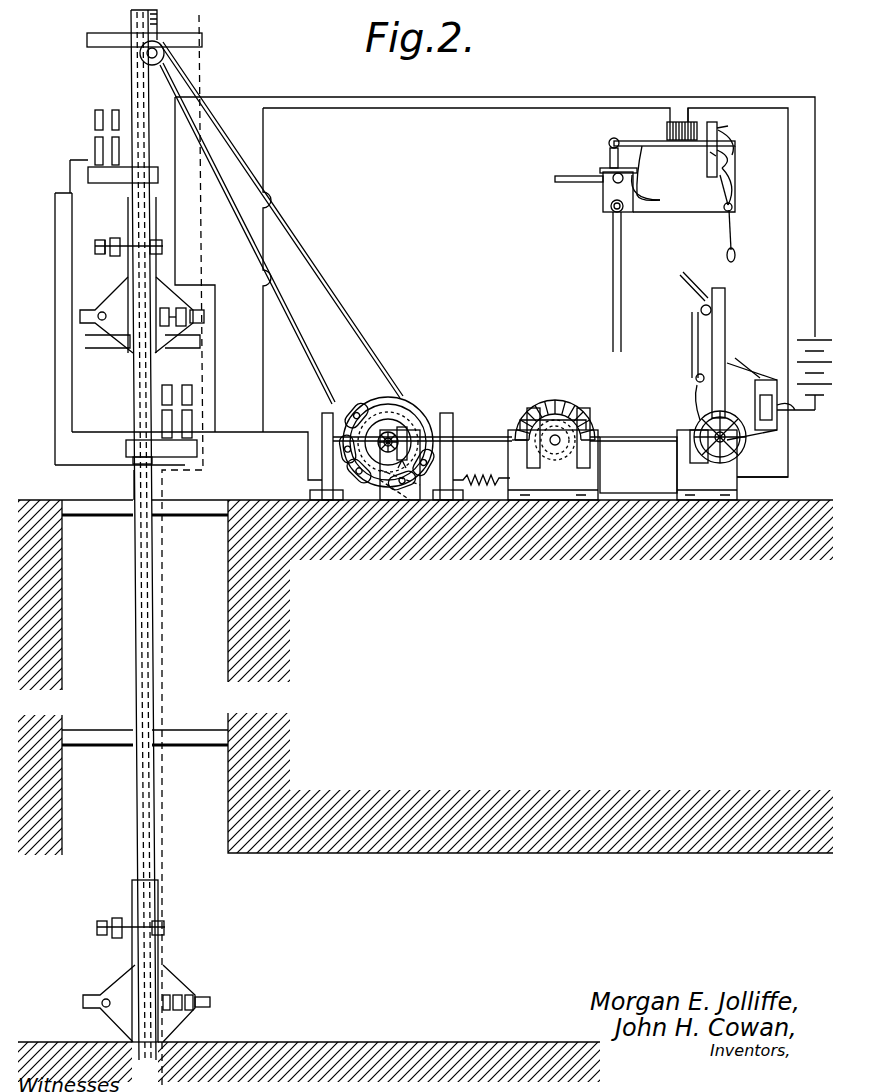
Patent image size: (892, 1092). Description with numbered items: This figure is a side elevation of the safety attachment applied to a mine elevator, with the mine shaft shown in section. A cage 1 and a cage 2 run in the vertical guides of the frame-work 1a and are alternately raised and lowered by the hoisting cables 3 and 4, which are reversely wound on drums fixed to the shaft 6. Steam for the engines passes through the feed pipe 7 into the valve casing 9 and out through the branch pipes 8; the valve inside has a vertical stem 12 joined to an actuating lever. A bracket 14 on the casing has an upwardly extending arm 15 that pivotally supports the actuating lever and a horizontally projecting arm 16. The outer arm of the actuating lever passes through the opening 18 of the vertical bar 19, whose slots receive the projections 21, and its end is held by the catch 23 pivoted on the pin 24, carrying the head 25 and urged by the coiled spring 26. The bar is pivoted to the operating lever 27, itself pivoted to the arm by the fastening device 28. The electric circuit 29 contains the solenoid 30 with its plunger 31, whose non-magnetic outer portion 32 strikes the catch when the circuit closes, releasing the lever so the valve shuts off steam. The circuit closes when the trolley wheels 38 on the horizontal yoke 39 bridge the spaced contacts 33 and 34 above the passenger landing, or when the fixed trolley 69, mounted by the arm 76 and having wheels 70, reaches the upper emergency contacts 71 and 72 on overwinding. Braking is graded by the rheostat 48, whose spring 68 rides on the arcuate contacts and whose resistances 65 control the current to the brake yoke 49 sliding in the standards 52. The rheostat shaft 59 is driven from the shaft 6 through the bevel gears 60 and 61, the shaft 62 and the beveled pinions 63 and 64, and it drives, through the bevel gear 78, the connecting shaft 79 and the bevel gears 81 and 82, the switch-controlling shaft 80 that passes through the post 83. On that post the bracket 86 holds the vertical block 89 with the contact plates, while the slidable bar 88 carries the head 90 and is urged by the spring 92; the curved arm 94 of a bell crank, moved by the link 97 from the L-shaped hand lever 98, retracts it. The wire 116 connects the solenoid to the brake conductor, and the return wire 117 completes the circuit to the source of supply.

The cage 1 is at (118, 978).
The frame-work 1a is at (134, 492).
The cage 2 is at (104, 306).
The cable 3 is at (195, 12).
The cable 4 is at (291, 333).
The shaft 6 is at (404, 425).
The feed pipe 7 is at (566, 176).
The branch pipe 8 is at (613, 270).
The valve casing 9 is at (605, 206).
The vertical stem 12 is at (608, 146).
The bracket 14 is at (640, 186).
The upwardly extending arm 15 is at (640, 160).
The horizontally projecting arm 16 is at (672, 214).
The bifurcation or opening 18 is at (720, 124).
The vertical bar or member 19 is at (708, 165).
The projections 21 is at (728, 156).
The catch 23 is at (730, 175).
The pin 24 is at (732, 200).
The head 25 is at (728, 136).
The coiled spring 26 is at (699, 153).
The operating lever 27 is at (734, 240).
The fastening device 28 is at (724, 212).
The electric circuit 29 is at (238, 434).
The solenoid 30 is at (676, 120).
The plunger 31 is at (674, 124).
The outer portion 32 is at (706, 120).
The contact 33 is at (195, 393).
The contact 34 is at (160, 393).
The trolley wheels 38 is at (205, 322).
The horizontal yoke 39 is at (180, 308).
The rheostat 48 is at (552, 398).
The yoke 49 is at (368, 402).
The standards 52 is at (322, 420).
The shaft 59 is at (583, 408).
The bevel gear 60 is at (558, 400).
The bevel gear 61 is at (527, 425).
The shaft 62 is at (482, 437).
The beveled pinion 63 is at (398, 430).
The beveled pinion 64 is at (370, 400).
The resistances 65 is at (490, 478).
The spring 68 is at (530, 400).
The fixed trolley 69 is at (118, 254).
The trolley wheels 70 is at (114, 240).
The upper emergency contact 71 is at (115, 110).
The upper emergency contact 72 is at (96, 124).
The arm 76 is at (165, 247).
The bevel gear 78 is at (598, 437).
The connecting shaft 79 is at (628, 441).
The switch-controlling shaft 80 is at (728, 448).
The bevel gear 81 is at (695, 432).
The bevel gear 82 is at (745, 450).
The standard or post 83 is at (725, 312).
The bracket 86 is at (748, 358).
The slidable bar or member 88 is at (760, 405).
The vertical block 89 is at (768, 382).
The block or head 90 is at (790, 412).
The spring 92 is at (694, 392).
The curved arm 94 is at (695, 378).
The link or rod 97 is at (692, 345).
The L-shaped hand lever 98 is at (698, 302).
The wire 116 is at (418, 109).
The return wire 117 is at (496, 97).